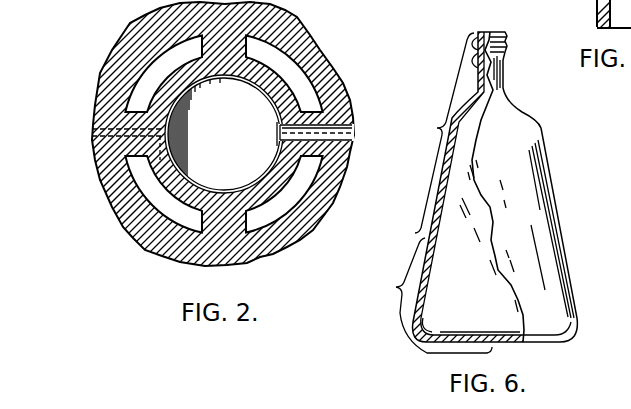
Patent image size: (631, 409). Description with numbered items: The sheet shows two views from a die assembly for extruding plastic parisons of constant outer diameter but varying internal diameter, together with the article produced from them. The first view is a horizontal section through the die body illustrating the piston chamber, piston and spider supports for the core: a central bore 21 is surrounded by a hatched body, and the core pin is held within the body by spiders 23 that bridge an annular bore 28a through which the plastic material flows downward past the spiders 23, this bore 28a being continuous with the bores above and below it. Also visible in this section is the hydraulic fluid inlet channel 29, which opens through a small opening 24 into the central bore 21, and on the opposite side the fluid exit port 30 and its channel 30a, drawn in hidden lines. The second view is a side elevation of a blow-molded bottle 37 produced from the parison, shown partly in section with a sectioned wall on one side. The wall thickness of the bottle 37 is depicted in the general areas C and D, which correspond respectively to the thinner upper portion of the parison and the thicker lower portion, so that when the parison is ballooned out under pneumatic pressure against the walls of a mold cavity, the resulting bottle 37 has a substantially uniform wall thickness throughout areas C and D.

In FIG. 2, the central bore 21 is at (222, 153).
In FIG. 2, the spiders 23 is at (227, 232).
In FIG. 2, the opening of screw bore 24 is at (278, 144).
In FIG. 2, the bore 28a is at (165, 207).
In FIG. 2, the hydraulic fluid inlet channel 29 is at (345, 132).
In FIG. 2, the fluid exit port 30 is at (162, 157).
In FIG. 2, the channel 30a is at (93, 139).
In FIG. 6, the bottle 37 is at (547, 223).
In FIG. 6, the general area of wall thickness C is at (444, 133).
In FIG. 6, the general area of wall thickness D is at (435, 295).